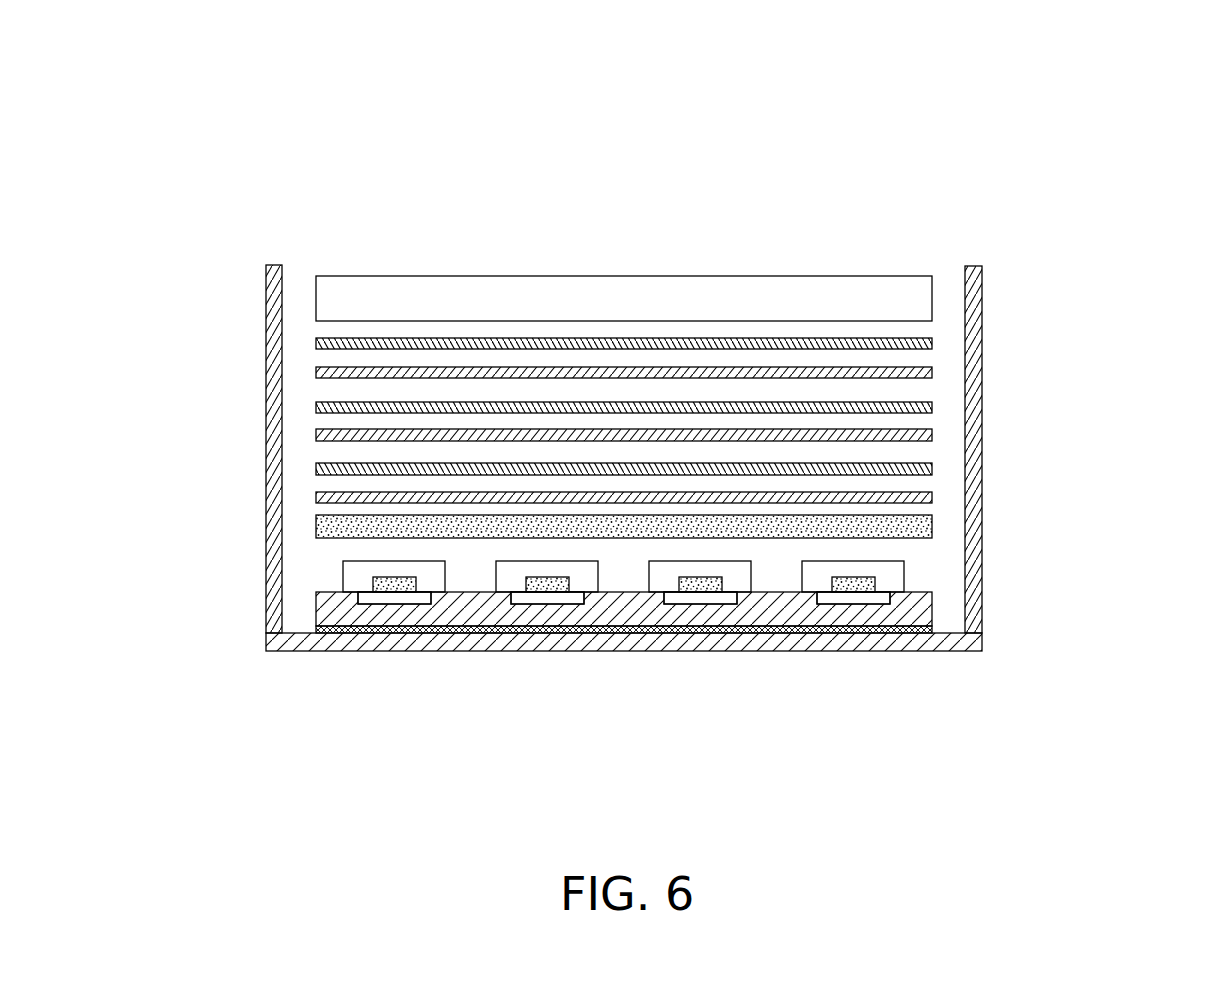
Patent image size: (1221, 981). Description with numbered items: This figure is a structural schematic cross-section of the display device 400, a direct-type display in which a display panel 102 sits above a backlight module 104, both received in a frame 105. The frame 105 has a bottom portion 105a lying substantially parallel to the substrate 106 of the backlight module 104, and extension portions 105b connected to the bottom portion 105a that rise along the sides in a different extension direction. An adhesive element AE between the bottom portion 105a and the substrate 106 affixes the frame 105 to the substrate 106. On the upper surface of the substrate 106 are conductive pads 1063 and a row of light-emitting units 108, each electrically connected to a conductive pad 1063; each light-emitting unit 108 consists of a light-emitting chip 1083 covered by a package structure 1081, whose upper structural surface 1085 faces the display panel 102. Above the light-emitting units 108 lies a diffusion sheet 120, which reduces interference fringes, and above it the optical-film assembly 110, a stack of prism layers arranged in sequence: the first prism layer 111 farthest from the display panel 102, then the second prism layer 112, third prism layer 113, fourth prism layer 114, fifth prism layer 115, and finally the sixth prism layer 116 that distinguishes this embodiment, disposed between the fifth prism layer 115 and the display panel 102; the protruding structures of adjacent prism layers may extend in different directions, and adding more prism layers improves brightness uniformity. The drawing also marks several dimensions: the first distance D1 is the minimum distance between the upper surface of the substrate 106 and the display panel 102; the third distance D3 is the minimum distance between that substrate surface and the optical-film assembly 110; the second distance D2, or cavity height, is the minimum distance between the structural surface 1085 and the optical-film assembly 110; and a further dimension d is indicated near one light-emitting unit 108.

The display device 400 is at (183, 61).
The display panel 102 is at (398, 285).
The backlight module 104 is at (759, 507).
The frame 105 is at (626, 506).
The bottom portion 105a is at (727, 651).
The extension portion 105b is at (266, 641).
The substrate 106 is at (687, 645).
The conductive pad 1063 is at (392, 597).
The light-emitting unit 108 is at (738, 574).
The package structure 1081 is at (898, 570).
The light-emitting chip 1083 is at (873, 583).
The structural surface 1085 is at (895, 561).
The optical-film assembly 110 is at (717, 431).
The first prism layer 111 is at (687, 497).
The second prism layer 112 is at (932, 469).
The third prism layer 113 is at (932, 435).
The fourth prism layer 114 is at (932, 407).
The fifth prism layer 115 is at (932, 372).
The sixth prism layer 116 is at (932, 343).
The diffusion sheet 120 is at (932, 527).
The adhesive element AE is at (522, 637).
The first distance D1 is at (316, 592).
The second distance D2 is at (343, 561).
The third distance D3 is at (310, 538).
The distance d is at (350, 528).